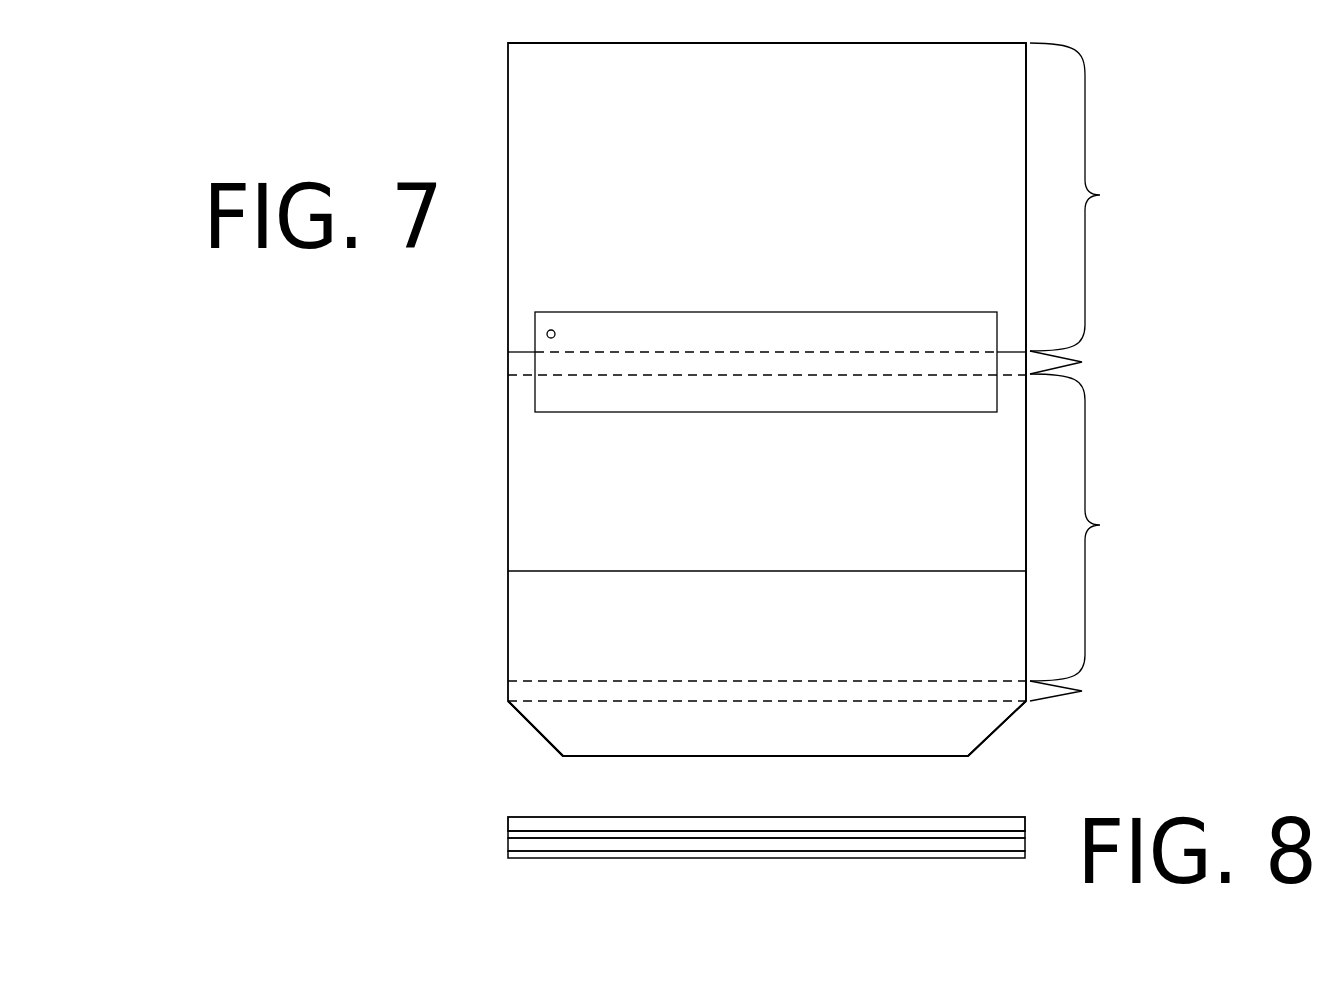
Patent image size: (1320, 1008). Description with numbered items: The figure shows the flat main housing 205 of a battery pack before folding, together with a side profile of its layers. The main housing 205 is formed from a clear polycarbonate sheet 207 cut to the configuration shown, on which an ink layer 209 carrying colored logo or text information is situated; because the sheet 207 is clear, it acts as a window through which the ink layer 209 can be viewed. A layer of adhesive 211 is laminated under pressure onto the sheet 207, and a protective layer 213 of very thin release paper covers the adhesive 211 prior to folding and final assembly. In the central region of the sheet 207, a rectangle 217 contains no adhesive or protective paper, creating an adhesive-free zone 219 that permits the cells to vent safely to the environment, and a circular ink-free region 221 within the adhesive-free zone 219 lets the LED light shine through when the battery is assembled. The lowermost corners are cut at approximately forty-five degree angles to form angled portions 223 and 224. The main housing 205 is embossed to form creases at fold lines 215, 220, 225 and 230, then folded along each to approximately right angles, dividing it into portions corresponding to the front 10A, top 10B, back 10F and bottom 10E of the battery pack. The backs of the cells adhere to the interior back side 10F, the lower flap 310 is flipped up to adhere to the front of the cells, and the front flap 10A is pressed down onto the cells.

In FIG. 7, the main housing 205 is at (480, 146).
In FIG. 7, the sheet 207 is at (1026, 185).
In FIG. 8, the sheet 207 is at (508, 824).
In FIG. 8, the ink layer 209 is at (508, 836).
In FIG. 8, the layer of adhesive 211 is at (508, 845).
In FIG. 8, the protective layer 213 is at (508, 855).
In FIG. 7, the fold line 215 is at (521, 352).
In FIG. 7, the rectangle 217 is at (878, 312).
In FIG. 7, the adhesive-free zone 219 is at (850, 392).
In FIG. 7, the fold line 220 is at (520, 376).
In FIG. 7, the circular ink-free region 221 is at (548, 330).
In FIG. 7, the angled portion 223 is at (557, 756).
In FIG. 7, the angled portion 224 is at (1007, 725).
In FIG. 7, the fold line 225 is at (537, 680).
In FIG. 7, the fold line 230 is at (537, 703).
In FIG. 7, the lower flap 310 is at (768, 757).
In FIG. 7, the front 10A is at (1088, 197).
In FIG. 7, the top 10B is at (1082, 361).
In FIG. 7, the bottom 10E is at (1082, 690).
In FIG. 7, the back 10F is at (1088, 527).